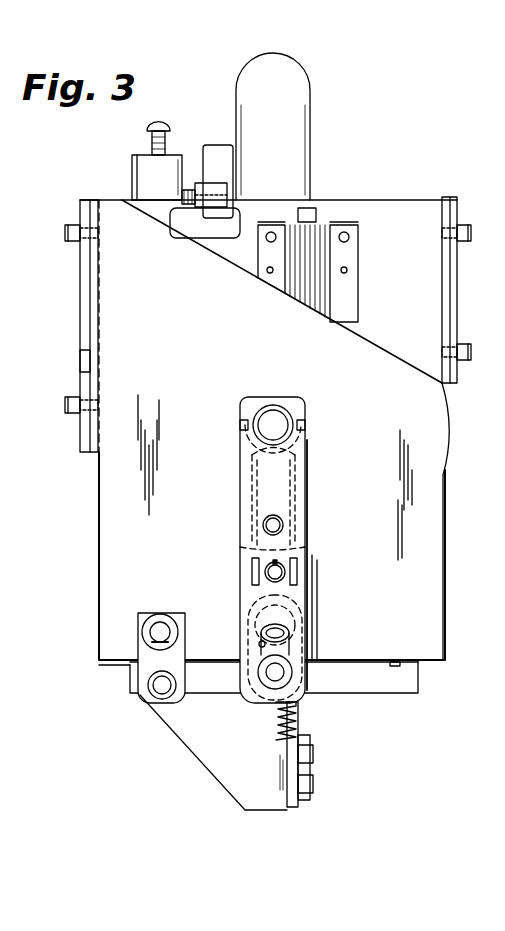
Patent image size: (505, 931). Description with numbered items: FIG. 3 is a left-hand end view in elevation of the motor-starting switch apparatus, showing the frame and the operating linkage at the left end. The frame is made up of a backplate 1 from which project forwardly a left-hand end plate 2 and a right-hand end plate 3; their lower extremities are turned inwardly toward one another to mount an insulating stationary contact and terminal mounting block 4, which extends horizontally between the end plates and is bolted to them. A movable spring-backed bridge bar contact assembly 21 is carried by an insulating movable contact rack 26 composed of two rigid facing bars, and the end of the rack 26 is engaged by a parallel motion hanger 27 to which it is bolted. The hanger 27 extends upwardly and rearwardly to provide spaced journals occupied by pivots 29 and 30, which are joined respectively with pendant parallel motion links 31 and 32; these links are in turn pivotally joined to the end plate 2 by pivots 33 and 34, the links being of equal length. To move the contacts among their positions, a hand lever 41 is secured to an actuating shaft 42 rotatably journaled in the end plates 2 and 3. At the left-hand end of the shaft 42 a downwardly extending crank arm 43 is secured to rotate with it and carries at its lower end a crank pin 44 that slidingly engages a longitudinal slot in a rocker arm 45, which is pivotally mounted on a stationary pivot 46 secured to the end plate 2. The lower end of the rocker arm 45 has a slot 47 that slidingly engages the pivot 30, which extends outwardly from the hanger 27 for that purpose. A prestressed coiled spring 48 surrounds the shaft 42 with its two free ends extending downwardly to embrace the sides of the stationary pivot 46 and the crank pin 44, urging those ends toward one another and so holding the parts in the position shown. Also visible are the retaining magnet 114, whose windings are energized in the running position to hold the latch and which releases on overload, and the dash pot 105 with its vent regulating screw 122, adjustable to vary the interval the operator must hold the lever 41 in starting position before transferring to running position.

The backplate 1 is at (82, 300).
The left-hand end plate 2 is at (445, 557).
The right-hand end plate 3 is at (400, 210).
The stationary contact and terminal mounting block 4 is at (415, 678).
The movable spring-backed bridge bar contact assembly 21 is at (300, 706).
The movable contact rack 26 is at (290, 806).
The parallel motion hanger 27 is at (215, 765).
The pivot 29 is at (158, 690).
The pivot 30 is at (283, 669).
The pendant parallel motion link 31 is at (138, 656).
The pendant parallel motion link 32 is at (292, 646).
The pivot 33 is at (160, 626).
The pivot 34 is at (290, 629).
The hand lever 41 is at (292, 130).
The actuating shaft 42 is at (275, 423).
The crank arm 43 is at (305, 455).
The crank pin 44 is at (282, 524).
The rocker arm 45 is at (305, 590).
The stationary pivot 46 is at (268, 573).
The slot 47 is at (259, 644).
The prestressed coiled spring 48 is at (252, 560).
The dash pot 105 is at (135, 178).
The retaining magnet 114 is at (355, 268).
The vent regulating screw 122 is at (172, 134).